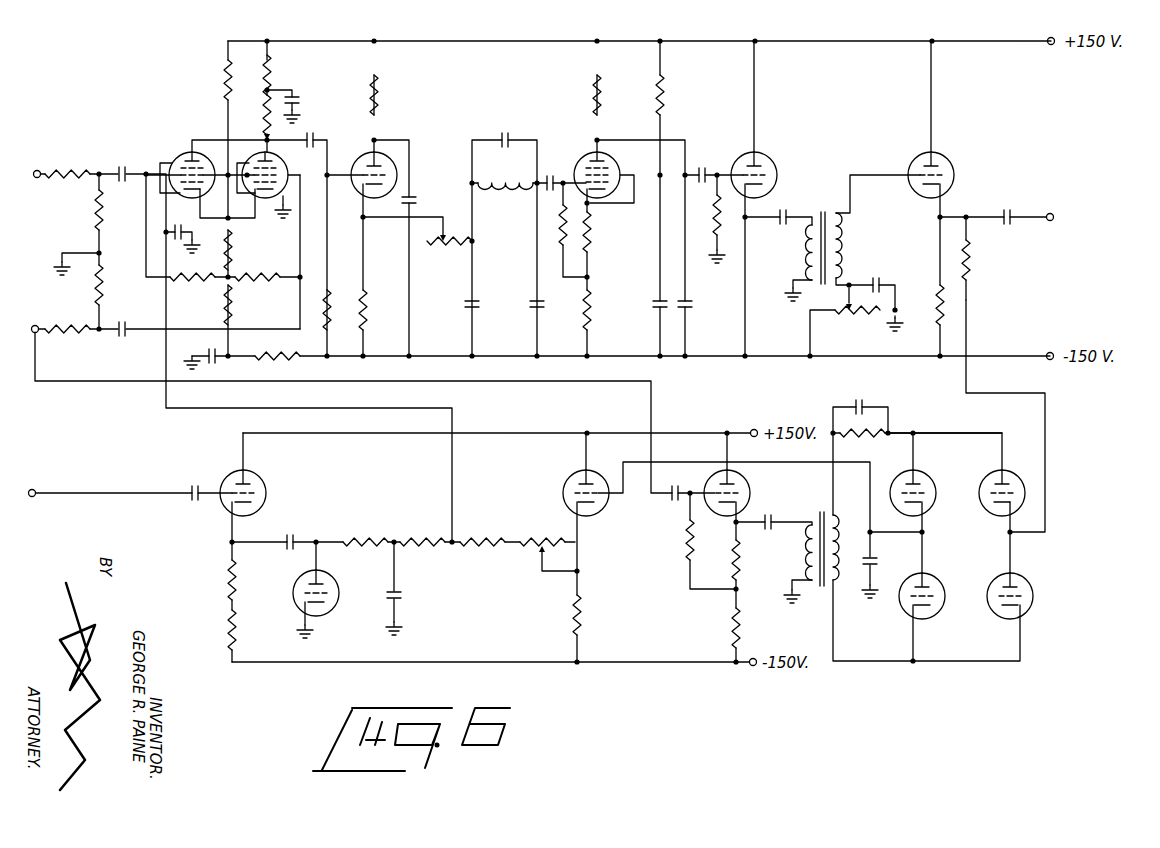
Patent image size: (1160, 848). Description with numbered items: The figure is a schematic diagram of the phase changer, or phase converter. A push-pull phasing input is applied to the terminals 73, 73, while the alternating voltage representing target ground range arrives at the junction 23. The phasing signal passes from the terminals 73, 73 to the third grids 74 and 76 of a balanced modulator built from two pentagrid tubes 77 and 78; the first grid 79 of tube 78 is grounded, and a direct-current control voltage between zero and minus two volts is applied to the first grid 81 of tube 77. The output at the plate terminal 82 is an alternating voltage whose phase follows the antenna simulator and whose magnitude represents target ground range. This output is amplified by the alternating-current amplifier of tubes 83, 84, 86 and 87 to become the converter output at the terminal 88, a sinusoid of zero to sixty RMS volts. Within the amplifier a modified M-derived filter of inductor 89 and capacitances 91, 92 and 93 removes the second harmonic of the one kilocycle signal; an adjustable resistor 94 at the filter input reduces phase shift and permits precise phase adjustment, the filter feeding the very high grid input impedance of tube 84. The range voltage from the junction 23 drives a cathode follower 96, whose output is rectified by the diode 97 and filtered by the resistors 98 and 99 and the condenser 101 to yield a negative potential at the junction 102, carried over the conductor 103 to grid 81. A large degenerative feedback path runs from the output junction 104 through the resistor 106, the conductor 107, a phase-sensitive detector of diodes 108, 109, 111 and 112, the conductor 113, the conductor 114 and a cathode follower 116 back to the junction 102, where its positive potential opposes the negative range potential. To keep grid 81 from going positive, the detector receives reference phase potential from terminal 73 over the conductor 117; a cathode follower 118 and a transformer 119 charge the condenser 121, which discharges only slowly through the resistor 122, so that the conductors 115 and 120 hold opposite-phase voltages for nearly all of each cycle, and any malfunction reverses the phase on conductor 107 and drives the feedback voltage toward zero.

The junction 23 is at (35, 490).
The terminals 73 is at (39, 170).
The third grid 74 is at (167, 170).
The third grid 76 is at (310, 148).
The pentagrid tube 77 is at (189, 156).
The pentagrid tube 78 is at (277, 157).
The first grid 79 is at (281, 202).
The first grid 81 is at (170, 195).
The plate terminal 82 is at (265, 139).
The tube 83 is at (365, 161).
The tube 84 is at (593, 161).
The tube 86 is at (740, 156).
The tube 87 is at (910, 156).
The output terminal 88 is at (1049, 212).
The inductor 89 is at (512, 189).
The capacitance 91 is at (504, 134).
The capacitance 92 is at (467, 303).
The capacitance 93 is at (532, 303).
The adjustable resistor 94 is at (446, 250).
The cathode follower 96 is at (226, 475).
The diode 97 is at (293, 596).
The resistor 98 is at (380, 531).
The resistor 99 is at (435, 531).
The condenser 101 is at (400, 596).
The junction 102 is at (453, 549).
The conductor 103 is at (166, 297).
The output junction 104 is at (966, 214).
The resistor 106 is at (972, 282).
The conductor 107 is at (968, 335).
The diode 108 is at (1012, 477).
The diode 109 is at (1027, 611).
The diode 111 is at (938, 581).
The diode 112 is at (936, 479).
The conductor 113 is at (900, 534).
The conductor 114 is at (634, 468).
The conductor 115 is at (975, 434).
The cathode follower 116 is at (563, 484).
The conductor 117 is at (40, 350).
The cathode follower 118 is at (749, 501).
The transformer 119 is at (822, 519).
The conductor 120 is at (985, 662).
The condenser 121 is at (857, 400).
The resistor 122 is at (866, 445).